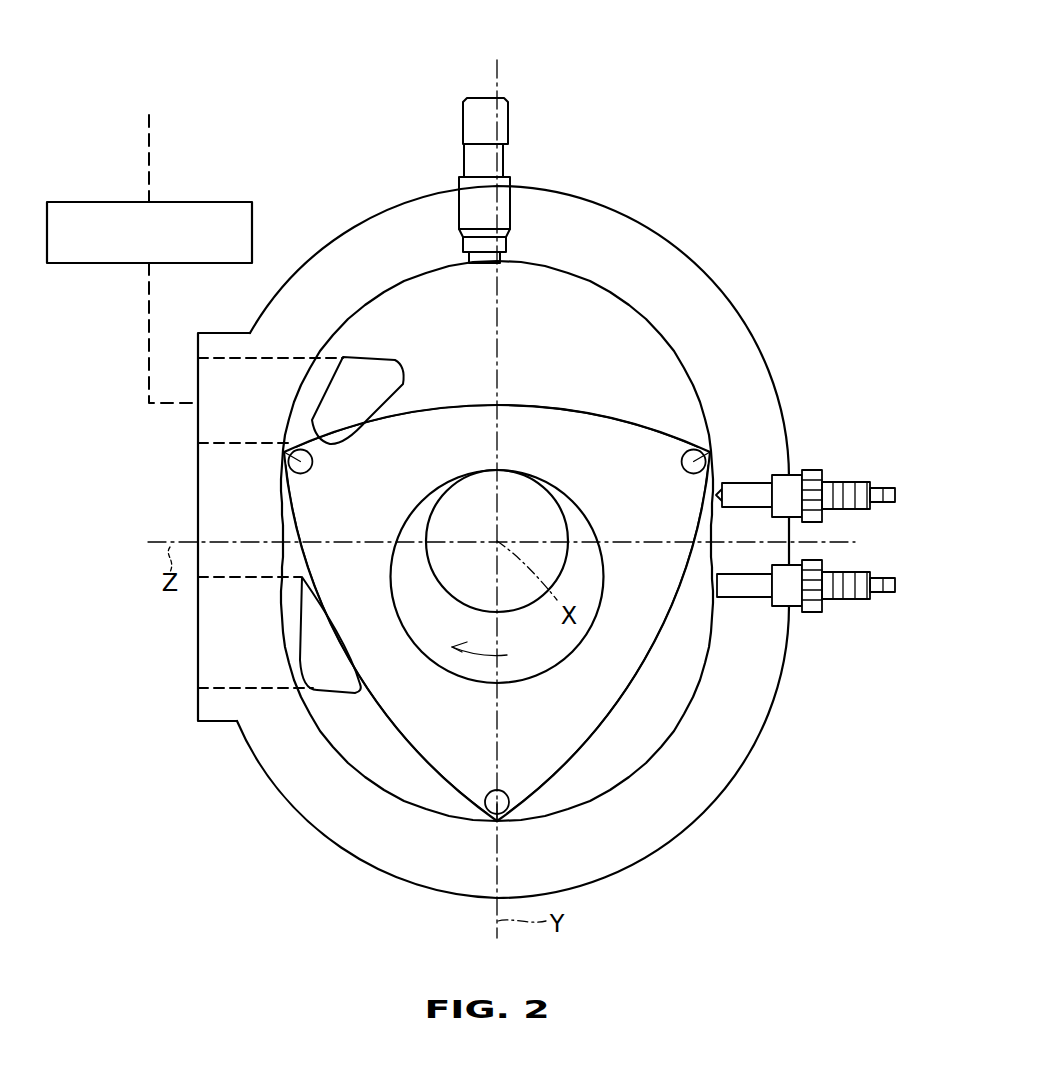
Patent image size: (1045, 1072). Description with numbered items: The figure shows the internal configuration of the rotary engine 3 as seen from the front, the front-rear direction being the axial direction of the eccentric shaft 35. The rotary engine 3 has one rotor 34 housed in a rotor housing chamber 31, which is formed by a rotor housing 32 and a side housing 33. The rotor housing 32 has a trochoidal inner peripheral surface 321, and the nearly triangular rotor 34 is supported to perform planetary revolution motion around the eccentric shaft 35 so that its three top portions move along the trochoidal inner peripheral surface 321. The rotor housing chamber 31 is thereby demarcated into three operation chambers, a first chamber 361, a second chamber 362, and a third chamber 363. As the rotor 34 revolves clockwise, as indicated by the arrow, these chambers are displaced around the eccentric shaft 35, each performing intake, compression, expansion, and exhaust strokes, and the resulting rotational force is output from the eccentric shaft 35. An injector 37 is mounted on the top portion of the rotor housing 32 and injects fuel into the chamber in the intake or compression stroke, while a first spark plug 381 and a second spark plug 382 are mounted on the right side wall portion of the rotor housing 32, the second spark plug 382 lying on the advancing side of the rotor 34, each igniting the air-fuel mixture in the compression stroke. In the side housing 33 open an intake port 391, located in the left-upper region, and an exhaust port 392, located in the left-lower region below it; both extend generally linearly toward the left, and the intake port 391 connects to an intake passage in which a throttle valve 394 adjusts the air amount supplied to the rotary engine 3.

The rotary engine 3 is at (758, 132).
The rotor housing chamber 31 is at (673, 388).
The rotor housing 32 is at (717, 278).
The trochoidal inner peripheral surface 321 is at (657, 340).
The side housing 33 is at (555, 297).
The rotor 34 is at (553, 407).
The eccentric shaft 35 is at (553, 503).
The first chamber 361 is at (517, 355).
The second chamber 362 is at (645, 697).
The third chamber 363 is at (371, 781).
The injector 37 is at (505, 100).
The first spark plug 381 is at (860, 482).
The second spark plug 382 is at (860, 572).
The intake port 391 is at (372, 370).
The exhaust port 392 is at (340, 690).
The throttle valve 394 is at (238, 202).